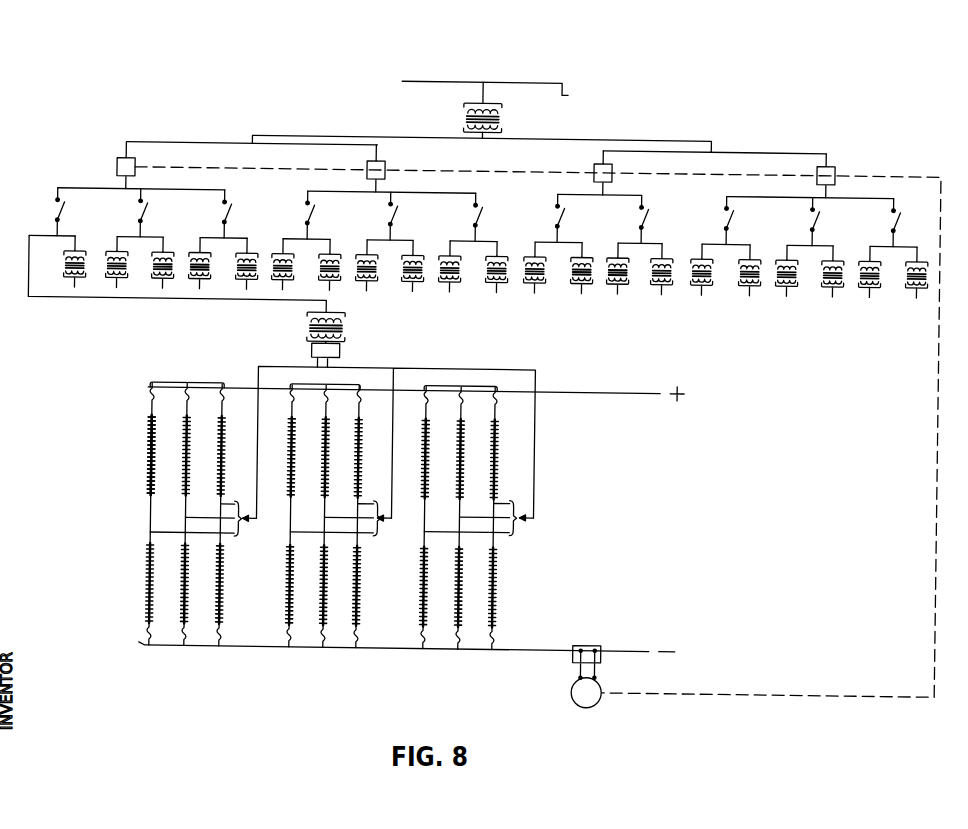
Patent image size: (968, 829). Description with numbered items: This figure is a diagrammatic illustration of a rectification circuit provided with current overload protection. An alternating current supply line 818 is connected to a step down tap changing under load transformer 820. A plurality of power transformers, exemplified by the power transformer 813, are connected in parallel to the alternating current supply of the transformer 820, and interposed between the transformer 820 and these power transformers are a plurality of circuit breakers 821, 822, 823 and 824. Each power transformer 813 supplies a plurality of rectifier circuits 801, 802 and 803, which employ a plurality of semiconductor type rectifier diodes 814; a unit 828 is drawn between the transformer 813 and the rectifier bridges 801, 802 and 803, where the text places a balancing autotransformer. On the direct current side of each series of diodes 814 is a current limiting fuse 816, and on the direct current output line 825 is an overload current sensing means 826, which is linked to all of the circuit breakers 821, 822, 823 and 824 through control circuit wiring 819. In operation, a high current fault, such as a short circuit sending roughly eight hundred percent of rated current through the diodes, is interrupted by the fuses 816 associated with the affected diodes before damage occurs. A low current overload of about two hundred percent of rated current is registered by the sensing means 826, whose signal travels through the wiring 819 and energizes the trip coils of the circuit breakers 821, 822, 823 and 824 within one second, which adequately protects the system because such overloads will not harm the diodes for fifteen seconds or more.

The alternating current supply line 818 is at (501, 94).
The step down tap changing under load transformer 820 is at (492, 109).
The circuit breaker 821 is at (114, 162).
The circuit breaker 822 is at (382, 162).
The circuit breaker 823 is at (609, 164).
The circuit breaker 824 is at (832, 164).
The power transformer 813 is at (343, 326).
The rectifier 828 is at (311, 347).
The rectifier circuit 801 is at (187, 382).
The rectifier circuit 802 is at (324, 382).
The rectifier circuit 803 is at (461, 382).
The semiconductor type rectifier diode 814 is at (149, 424).
The current limiting fuse 816 is at (142, 642).
The direct current output line 825 is at (633, 646).
The overload current sensing means 826 is at (600, 665).
The control circuit wiring 819 is at (938, 587).